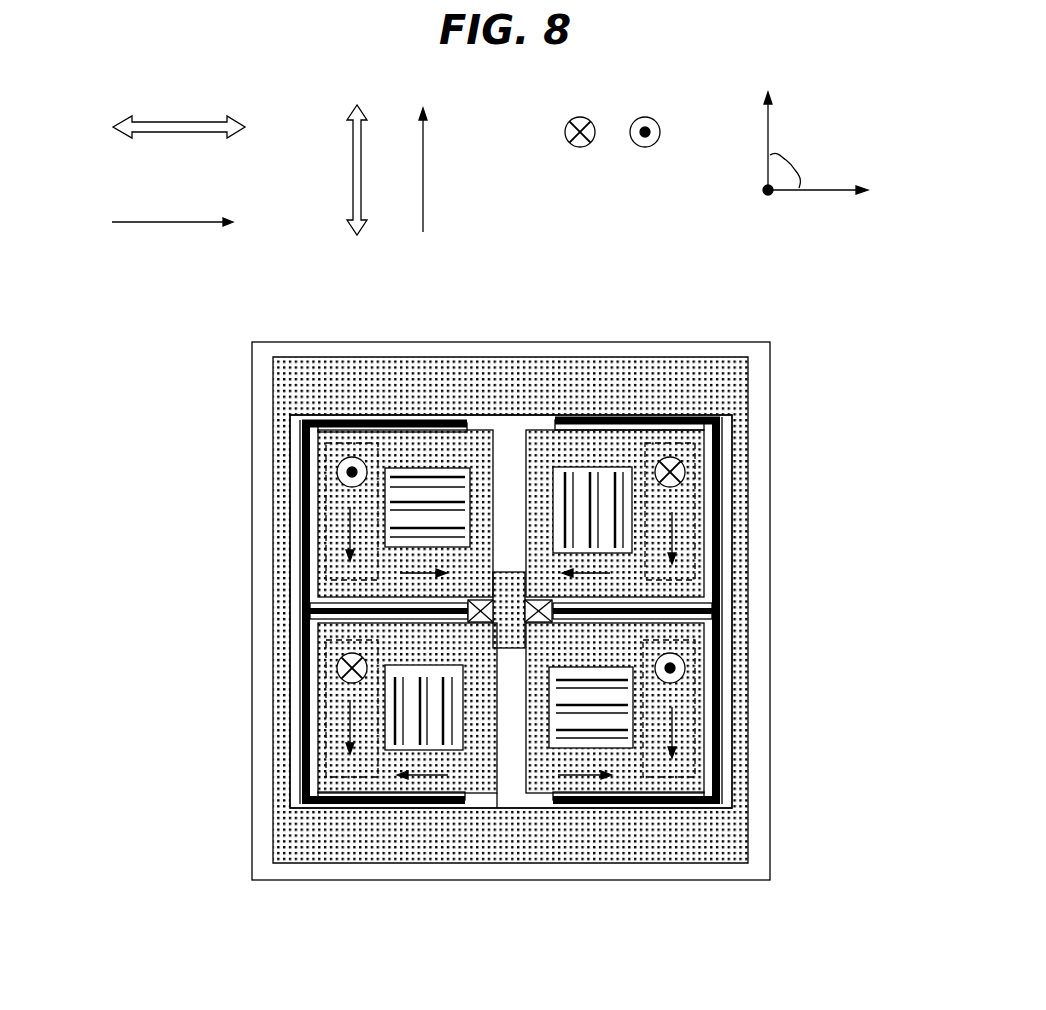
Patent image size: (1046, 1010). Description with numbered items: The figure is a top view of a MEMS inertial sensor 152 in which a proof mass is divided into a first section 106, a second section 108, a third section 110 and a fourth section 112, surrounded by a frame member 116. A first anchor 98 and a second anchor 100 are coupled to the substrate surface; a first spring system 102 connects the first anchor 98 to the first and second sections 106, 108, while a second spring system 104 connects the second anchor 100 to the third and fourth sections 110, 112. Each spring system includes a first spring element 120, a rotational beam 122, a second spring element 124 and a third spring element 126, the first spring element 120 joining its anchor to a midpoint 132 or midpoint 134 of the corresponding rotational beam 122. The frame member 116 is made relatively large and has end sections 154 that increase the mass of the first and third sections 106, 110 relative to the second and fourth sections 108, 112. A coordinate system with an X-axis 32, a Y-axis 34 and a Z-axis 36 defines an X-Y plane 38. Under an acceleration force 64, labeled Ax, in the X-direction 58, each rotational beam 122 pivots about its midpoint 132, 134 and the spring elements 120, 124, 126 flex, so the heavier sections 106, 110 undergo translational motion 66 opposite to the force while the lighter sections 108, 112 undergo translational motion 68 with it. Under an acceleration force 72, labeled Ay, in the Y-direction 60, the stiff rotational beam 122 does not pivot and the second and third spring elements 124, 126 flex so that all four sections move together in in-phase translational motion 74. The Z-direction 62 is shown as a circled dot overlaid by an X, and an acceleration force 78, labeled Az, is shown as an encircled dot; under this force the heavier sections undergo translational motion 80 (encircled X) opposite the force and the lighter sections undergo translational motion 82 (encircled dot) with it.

The X-axis 32 is at (820, 192).
The Y-axis 34 is at (770, 122).
The Z-axis 36 is at (769, 194).
The X-Y plane 38 is at (792, 167).
The X-direction 58 is at (158, 121).
The Y-direction 60 is at (362, 140).
The Z-direction 62 is at (566, 128).
The acceleration force 64 is at (153, 220).
The translational motion 66 is at (562, 573).
The translational motion 68 is at (447, 573).
The acceleration force 72 is at (427, 140).
The in-phase translational motion 74 is at (350, 530).
The acceleration force 78 is at (630, 130).
The translational motion 80 is at (685, 465).
The translational motion 82 is at (340, 470).
The first anchor 98 is at (553, 607).
The second anchor 100 is at (468, 605).
The first spring system 102 is at (735, 423).
The second spring system 104 is at (293, 430).
The first section 106 is at (579, 463).
The second section 108 is at (572, 661).
The third section 110 is at (407, 661).
The fourth section 112 is at (407, 466).
The frame member 116 is at (303, 395).
The first spring element 120 is at (320, 608).
The rotational beam 122 is at (304, 478).
The second spring element 124 is at (605, 420).
The third spring element 126 is at (374, 423).
The midpoint 132 is at (722, 628).
The midpoint 134 is at (302, 628).
The inertial sensor 152 is at (860, 922).
The end sections 154 is at (362, 365).